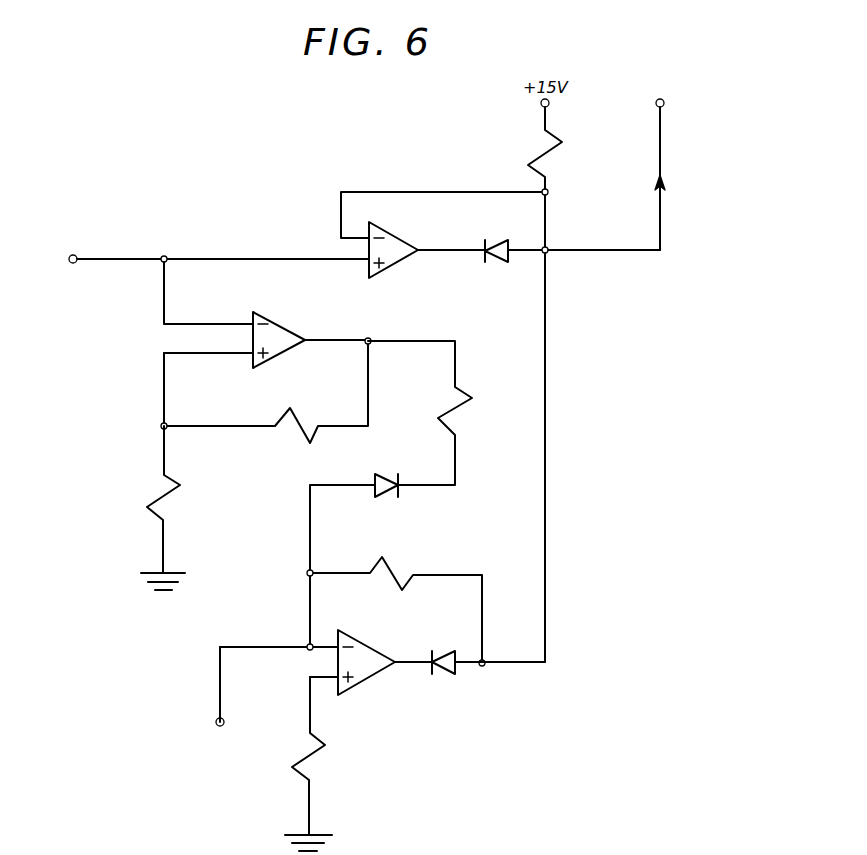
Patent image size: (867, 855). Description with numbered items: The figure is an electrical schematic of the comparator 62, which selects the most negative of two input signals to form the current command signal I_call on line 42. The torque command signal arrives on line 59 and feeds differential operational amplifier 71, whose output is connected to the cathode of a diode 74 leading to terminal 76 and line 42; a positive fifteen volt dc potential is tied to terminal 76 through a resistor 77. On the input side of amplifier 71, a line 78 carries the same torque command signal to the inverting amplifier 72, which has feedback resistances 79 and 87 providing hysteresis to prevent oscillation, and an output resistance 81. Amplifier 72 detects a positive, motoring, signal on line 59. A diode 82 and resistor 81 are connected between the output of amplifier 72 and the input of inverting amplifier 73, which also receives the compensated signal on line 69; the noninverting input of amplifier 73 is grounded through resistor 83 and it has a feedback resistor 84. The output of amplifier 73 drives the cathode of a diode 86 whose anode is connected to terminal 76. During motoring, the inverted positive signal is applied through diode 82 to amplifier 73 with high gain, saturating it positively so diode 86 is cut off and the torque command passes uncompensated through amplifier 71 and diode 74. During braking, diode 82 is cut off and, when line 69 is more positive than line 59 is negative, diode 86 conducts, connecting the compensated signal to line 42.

The line 42 is at (663, 145).
The line 59 is at (120, 257).
The comparator 62 is at (615, 403).
The line 69 is at (219, 678).
The differential operational amplifier 71 is at (405, 242).
The differential operational amplifier 72 is at (280, 331).
The differential operational amplifier 73 is at (380, 650).
The diode 74 is at (500, 264).
The terminal 76 is at (549, 248).
The resistor 77 is at (545, 152).
The line 78 is at (164, 298).
The feedback resistance 79 is at (300, 433).
The output resistance 81 is at (465, 397).
The diode 82 is at (383, 468).
The resistor 83 is at (313, 753).
The feedback resistor 84 is at (393, 565).
The diode 86 is at (442, 673).
The feedback resistance 87 is at (160, 498).